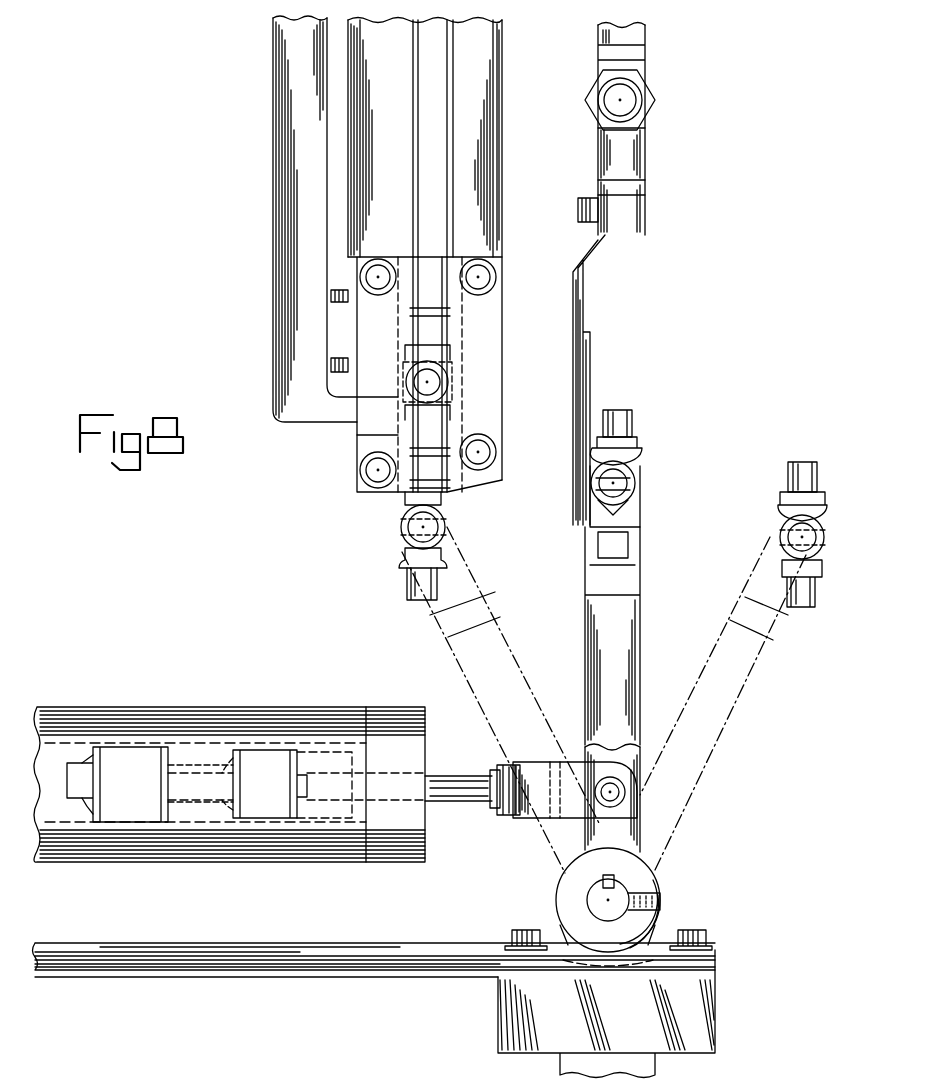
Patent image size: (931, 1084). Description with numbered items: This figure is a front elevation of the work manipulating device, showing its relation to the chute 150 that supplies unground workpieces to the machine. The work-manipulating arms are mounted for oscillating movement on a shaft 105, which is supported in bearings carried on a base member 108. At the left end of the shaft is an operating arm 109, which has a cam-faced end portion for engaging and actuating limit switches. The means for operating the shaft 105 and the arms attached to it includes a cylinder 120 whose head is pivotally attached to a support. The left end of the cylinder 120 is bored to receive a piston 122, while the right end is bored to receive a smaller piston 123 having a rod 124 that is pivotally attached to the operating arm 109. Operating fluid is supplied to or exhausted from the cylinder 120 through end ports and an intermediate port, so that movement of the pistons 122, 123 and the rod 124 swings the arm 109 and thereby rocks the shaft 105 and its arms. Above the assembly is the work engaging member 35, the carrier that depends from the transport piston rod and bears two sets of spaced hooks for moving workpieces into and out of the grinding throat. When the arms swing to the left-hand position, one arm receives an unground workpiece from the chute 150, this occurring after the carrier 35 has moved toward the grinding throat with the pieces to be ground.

The chute 150 is at (490, 191).
The work engaging member 35 is at (600, 258).
The operating arm 109 is at (640, 749).
The shaft 105 is at (592, 902).
The base member 108 is at (518, 1003).
The cylinder 120 is at (178, 710).
The piston 122 is at (137, 812).
The smaller piston 123 is at (270, 808).
The rod 124 is at (466, 802).